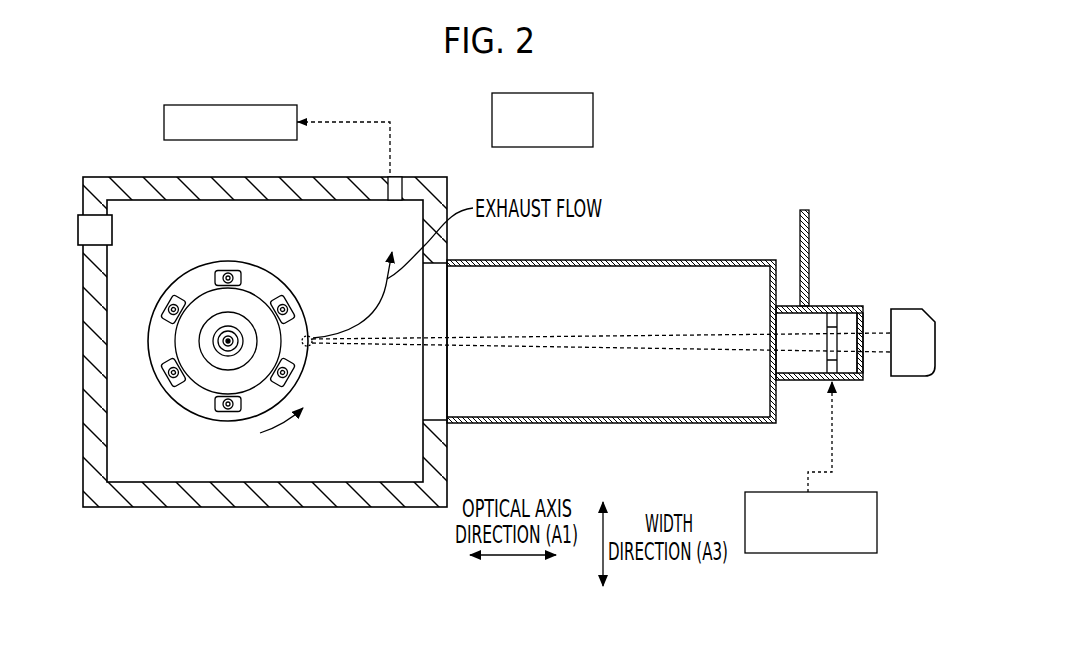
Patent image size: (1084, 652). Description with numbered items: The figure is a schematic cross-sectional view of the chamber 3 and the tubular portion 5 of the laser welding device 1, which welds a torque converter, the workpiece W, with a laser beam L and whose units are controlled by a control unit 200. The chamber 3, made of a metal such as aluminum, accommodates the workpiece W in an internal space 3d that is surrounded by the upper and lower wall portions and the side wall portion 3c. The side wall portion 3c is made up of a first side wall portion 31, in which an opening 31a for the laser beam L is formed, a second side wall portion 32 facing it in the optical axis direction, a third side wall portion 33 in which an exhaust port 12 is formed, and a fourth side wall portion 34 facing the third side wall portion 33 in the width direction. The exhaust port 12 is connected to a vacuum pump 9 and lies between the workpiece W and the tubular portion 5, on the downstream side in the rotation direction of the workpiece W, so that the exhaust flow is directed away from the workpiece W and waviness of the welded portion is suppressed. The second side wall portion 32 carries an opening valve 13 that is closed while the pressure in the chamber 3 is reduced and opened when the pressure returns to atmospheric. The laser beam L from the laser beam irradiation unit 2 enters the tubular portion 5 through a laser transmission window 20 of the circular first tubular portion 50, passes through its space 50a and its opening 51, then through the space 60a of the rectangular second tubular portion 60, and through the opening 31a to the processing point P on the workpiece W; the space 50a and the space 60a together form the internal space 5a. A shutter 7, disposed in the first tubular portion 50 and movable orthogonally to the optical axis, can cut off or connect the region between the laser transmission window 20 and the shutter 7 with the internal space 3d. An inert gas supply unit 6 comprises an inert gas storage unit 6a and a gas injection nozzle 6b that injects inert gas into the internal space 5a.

The laser welding device 1 is at (695, 190).
The laser beam irradiation unit 2 is at (912, 313).
The chamber 3 is at (314, 340).
The side wall portion 3c is at (314, 347).
The internal space 3d is at (193, 212).
The tubular portion 5 is at (611, 297).
The internal space of tubular portion 5a is at (608, 317).
The inert gas supply unit 6 is at (811, 490).
The inert gas storage unit 6a is at (845, 555).
The gas injection nozzle 6b is at (822, 362).
The shutter 7 is at (809, 227).
The vacuum pump 9 is at (254, 106).
The exhaust port 12 is at (397, 177).
The opening valve 13 is at (78, 214).
The laser transmission window 20 is at (863, 362).
The first side wall portion 31 is at (436, 462).
The opening 31a is at (455, 418).
The second side wall portion 32 is at (96, 458).
The third side wall portion 33 is at (332, 185).
The fourth side wall portion 34 is at (272, 497).
The first tubular portion 50 is at (802, 282).
The space of first tubular portion 50a is at (783, 318).
The opening 51 is at (770, 360).
The second tubular portion 60 is at (737, 260).
The space of second tubular portion 60a is at (680, 280).
The control unit 200 is at (593, 117).
The workpiece W is at (267, 264).
The processing point P is at (312, 346).
The laser beam L is at (658, 352).